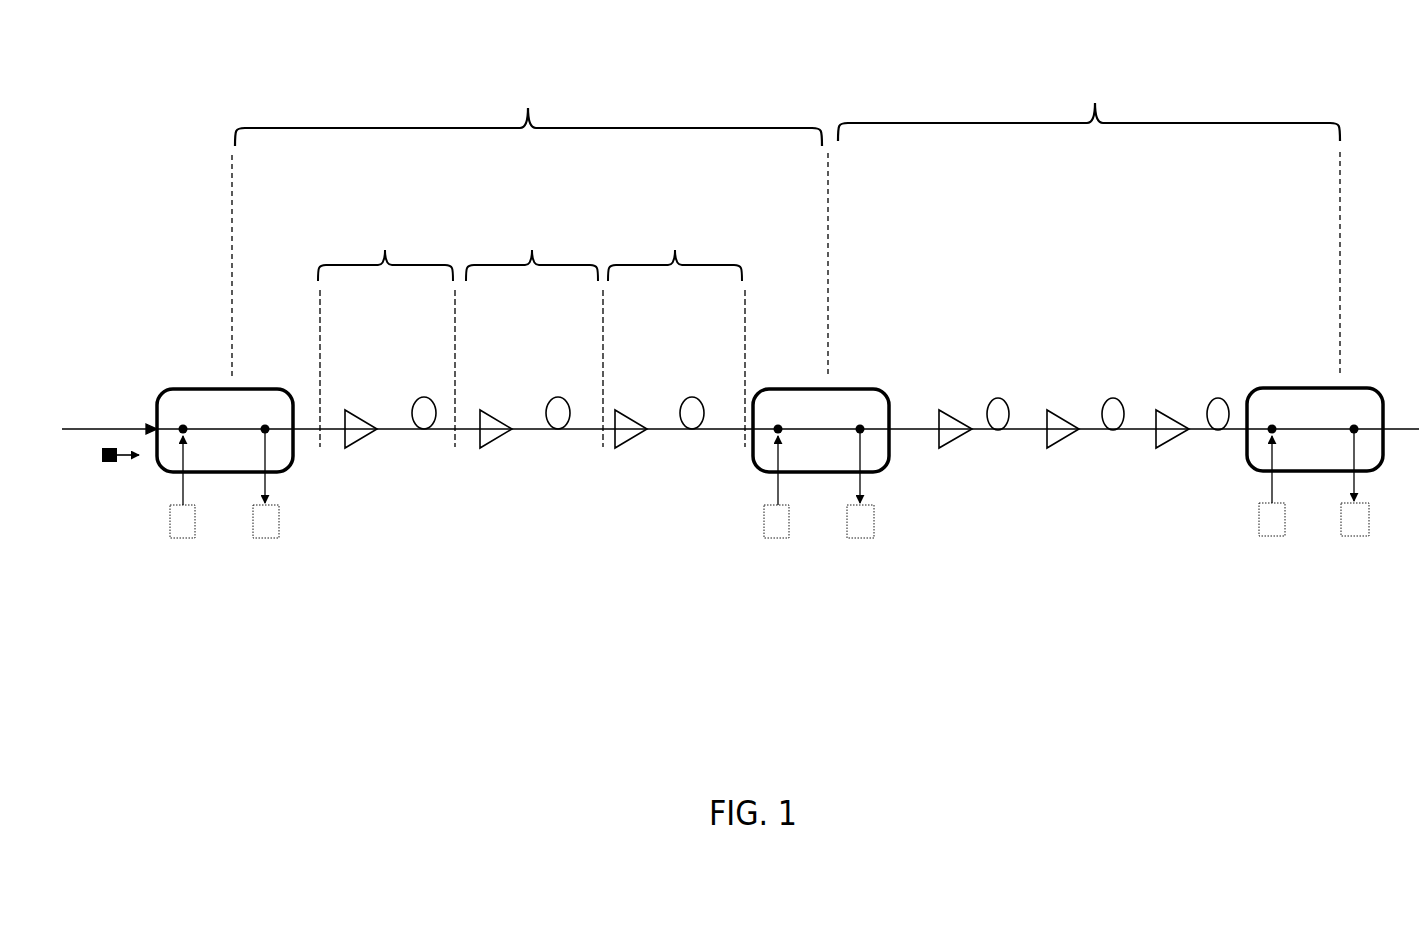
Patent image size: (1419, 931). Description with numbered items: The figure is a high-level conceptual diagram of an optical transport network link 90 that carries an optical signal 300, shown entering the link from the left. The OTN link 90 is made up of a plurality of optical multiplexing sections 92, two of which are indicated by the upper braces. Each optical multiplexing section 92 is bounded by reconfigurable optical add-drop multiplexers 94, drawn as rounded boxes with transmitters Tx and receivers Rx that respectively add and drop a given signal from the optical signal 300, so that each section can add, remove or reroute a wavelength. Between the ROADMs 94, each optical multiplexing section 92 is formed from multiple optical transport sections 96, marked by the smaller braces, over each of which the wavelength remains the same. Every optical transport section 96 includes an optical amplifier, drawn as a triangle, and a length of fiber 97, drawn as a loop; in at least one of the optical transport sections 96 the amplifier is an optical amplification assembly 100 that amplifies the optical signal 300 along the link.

The optical transport network link 90 is at (152, 135).
The optical multiplexing section 92 is at (786, 221).
The reconfigurable optical add-drop multiplexer 94 is at (215, 388).
The optical transport section 96 is at (531, 335).
The length of fiber 97 is at (424, 397).
The optical amplification assembly 100 is at (360, 443).
The optical signal 300 is at (112, 467).